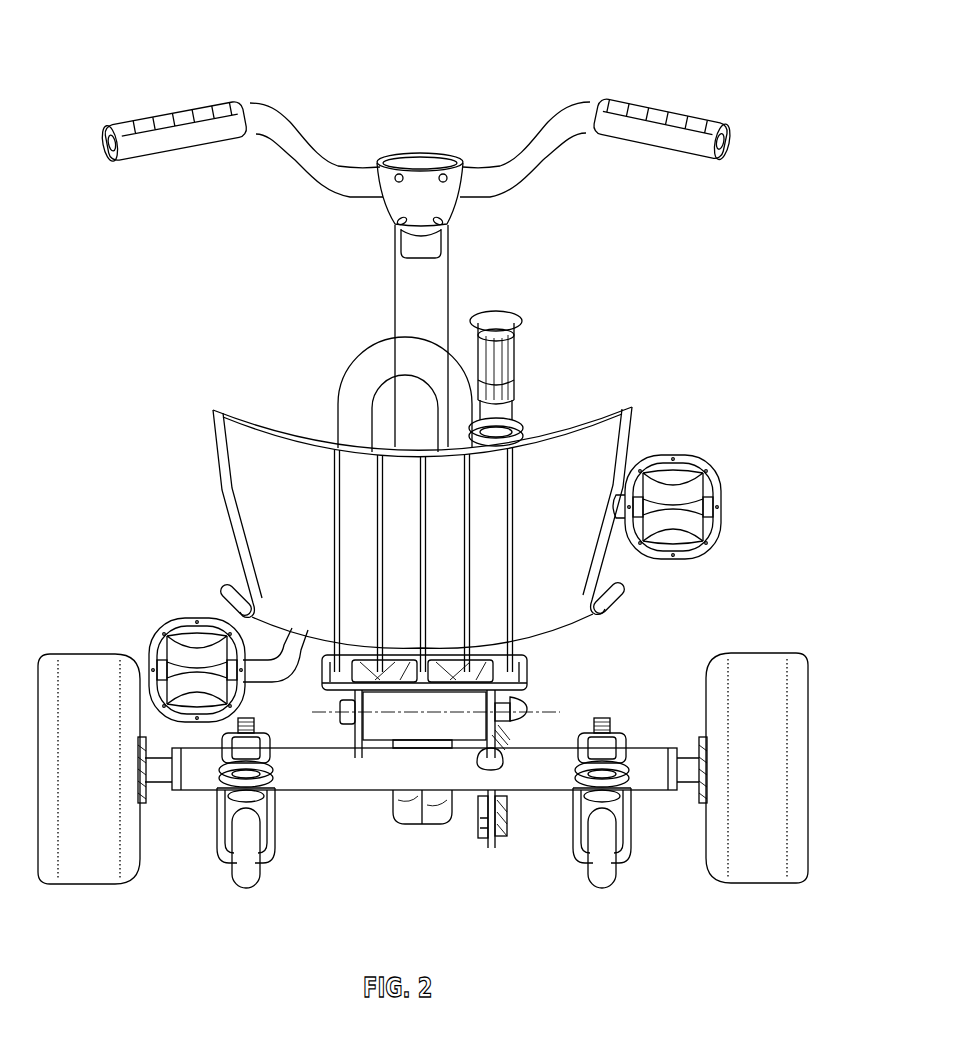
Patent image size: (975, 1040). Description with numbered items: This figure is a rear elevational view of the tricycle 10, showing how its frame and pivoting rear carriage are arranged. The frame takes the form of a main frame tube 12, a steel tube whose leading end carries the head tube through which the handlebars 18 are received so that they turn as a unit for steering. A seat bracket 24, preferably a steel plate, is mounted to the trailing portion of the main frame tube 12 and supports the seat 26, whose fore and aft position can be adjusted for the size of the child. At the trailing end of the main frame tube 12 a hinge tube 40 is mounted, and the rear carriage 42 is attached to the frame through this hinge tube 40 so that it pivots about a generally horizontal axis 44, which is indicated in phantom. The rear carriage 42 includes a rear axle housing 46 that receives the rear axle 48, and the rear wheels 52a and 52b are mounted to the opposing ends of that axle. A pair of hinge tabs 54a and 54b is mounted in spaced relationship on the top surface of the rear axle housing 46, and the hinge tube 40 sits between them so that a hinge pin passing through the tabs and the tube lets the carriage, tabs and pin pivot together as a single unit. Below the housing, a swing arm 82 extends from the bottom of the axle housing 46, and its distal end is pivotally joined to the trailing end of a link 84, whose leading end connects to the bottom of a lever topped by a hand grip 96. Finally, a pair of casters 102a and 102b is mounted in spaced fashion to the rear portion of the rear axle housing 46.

The tricycle 10 is at (191, 48).
The main frame tube 12 is at (428, 291).
The handlebars 18 is at (552, 121).
The seat bracket 24 is at (530, 681).
The seat 26 is at (422, 504).
The hinge tube 40 is at (380, 742).
The rear carriage 42 is at (700, 624).
The horizontal axis 44 is at (548, 712).
The rear axle housing 46 is at (530, 778).
The rear axle 48 is at (158, 772).
The rear wheel 52a is at (92, 870).
The rear wheel 52b is at (758, 868).
The hinge tab 54a is at (355, 744).
The hinge tab 54b is at (503, 754).
The swing arm 82 is at (482, 800).
The link 84 is at (510, 804).
The hand grip 96 is at (520, 372).
The caster 102a is at (247, 890).
The caster 102b is at (600, 890).